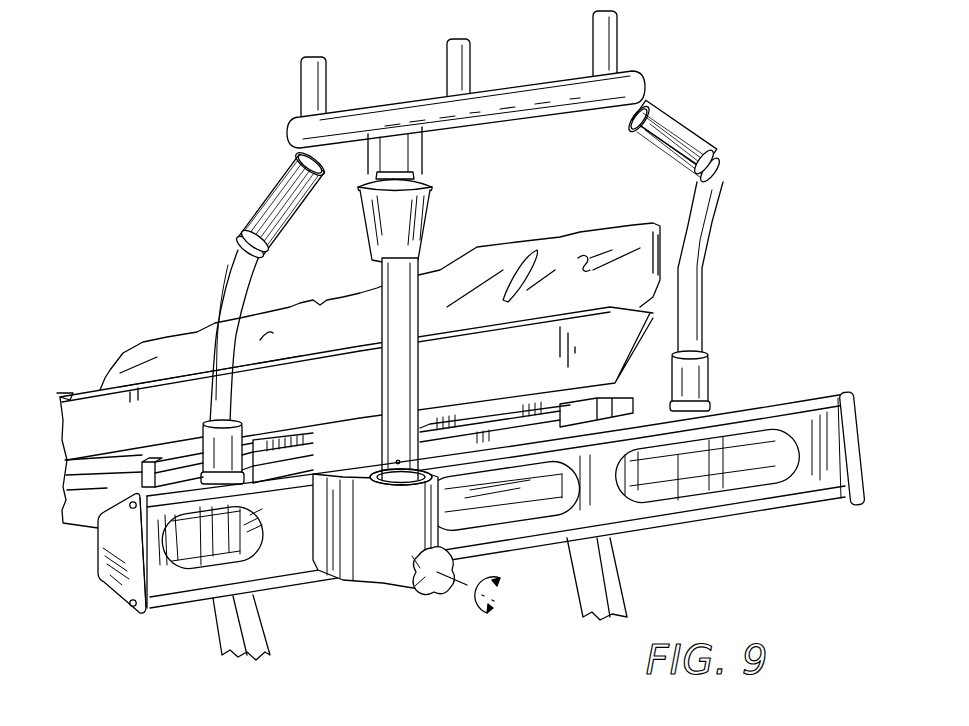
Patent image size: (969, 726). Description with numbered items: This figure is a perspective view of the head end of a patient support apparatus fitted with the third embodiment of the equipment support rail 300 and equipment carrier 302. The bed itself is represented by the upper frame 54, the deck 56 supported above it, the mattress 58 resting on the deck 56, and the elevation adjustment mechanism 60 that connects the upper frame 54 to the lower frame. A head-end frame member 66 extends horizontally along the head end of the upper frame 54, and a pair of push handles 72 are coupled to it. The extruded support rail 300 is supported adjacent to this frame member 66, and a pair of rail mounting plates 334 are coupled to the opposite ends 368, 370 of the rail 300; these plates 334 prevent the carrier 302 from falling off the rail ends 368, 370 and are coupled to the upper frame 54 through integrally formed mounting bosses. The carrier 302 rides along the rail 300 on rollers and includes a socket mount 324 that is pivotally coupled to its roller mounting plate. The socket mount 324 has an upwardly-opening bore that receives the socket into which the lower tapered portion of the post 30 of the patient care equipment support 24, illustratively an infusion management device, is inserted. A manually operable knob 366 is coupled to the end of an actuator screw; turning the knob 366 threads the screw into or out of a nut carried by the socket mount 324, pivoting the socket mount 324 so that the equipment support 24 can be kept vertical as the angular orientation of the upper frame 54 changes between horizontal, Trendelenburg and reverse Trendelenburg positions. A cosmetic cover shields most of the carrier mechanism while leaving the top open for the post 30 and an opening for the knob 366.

The patient care equipment support 24 is at (628, 43).
The push handles 72 is at (270, 210).
The mattress 58 is at (597, 240).
The post 30 is at (382, 278).
The deck 56 is at (86, 398).
The upper frame 54 is at (82, 518).
The socket mount 324 is at (423, 473).
The head-end frame member 66 is at (640, 415).
The rail mounting plates 334 is at (808, 420).
The support rail 300 is at (690, 512).
The end of the rail 370 is at (835, 525).
The end of the rail 368 is at (165, 625).
The elevation adjustment mechanism 60 is at (220, 643).
The equipment carrier 302 is at (372, 602).
The knob 366 is at (438, 592).